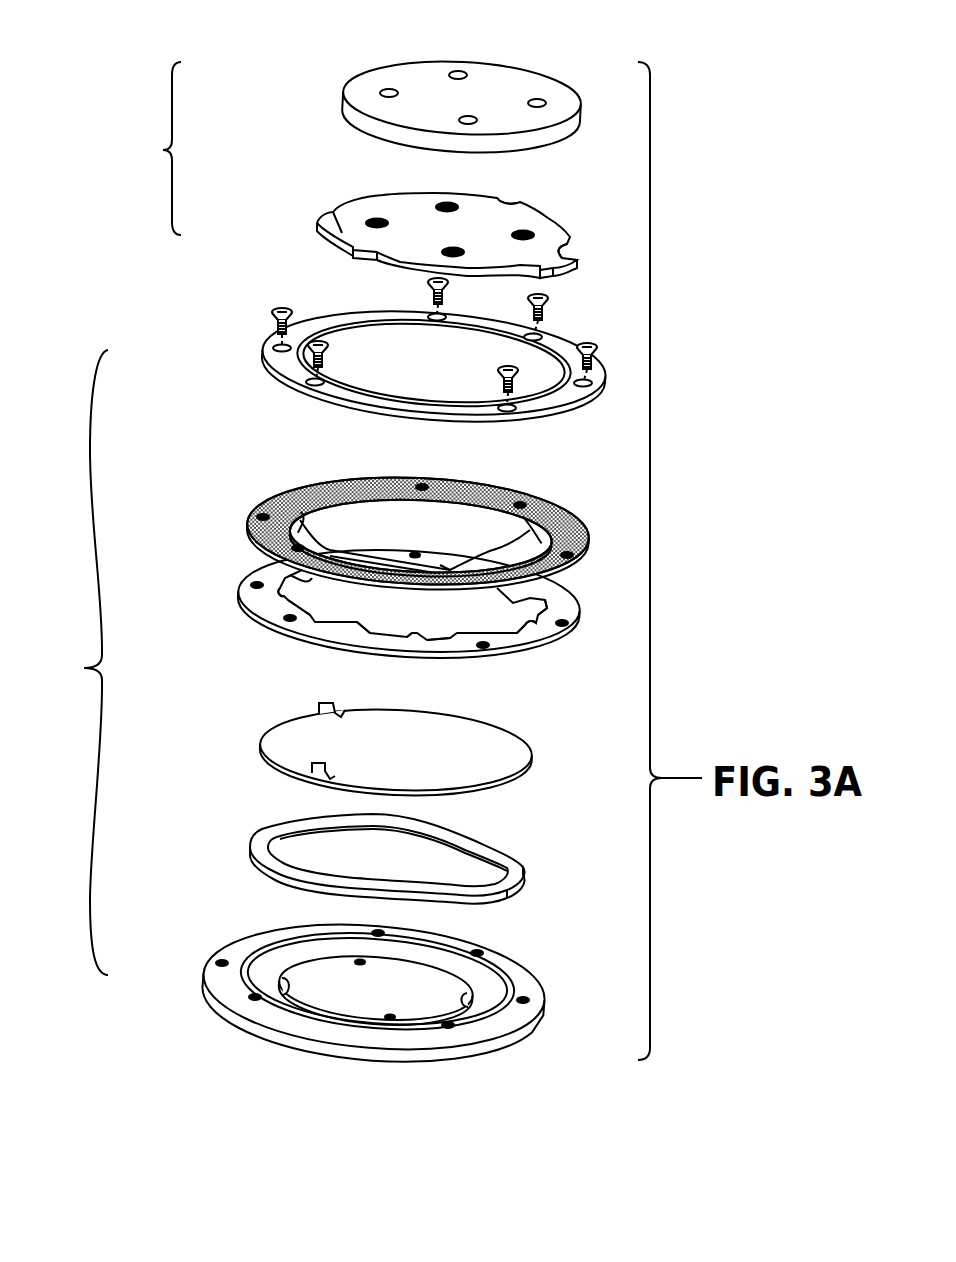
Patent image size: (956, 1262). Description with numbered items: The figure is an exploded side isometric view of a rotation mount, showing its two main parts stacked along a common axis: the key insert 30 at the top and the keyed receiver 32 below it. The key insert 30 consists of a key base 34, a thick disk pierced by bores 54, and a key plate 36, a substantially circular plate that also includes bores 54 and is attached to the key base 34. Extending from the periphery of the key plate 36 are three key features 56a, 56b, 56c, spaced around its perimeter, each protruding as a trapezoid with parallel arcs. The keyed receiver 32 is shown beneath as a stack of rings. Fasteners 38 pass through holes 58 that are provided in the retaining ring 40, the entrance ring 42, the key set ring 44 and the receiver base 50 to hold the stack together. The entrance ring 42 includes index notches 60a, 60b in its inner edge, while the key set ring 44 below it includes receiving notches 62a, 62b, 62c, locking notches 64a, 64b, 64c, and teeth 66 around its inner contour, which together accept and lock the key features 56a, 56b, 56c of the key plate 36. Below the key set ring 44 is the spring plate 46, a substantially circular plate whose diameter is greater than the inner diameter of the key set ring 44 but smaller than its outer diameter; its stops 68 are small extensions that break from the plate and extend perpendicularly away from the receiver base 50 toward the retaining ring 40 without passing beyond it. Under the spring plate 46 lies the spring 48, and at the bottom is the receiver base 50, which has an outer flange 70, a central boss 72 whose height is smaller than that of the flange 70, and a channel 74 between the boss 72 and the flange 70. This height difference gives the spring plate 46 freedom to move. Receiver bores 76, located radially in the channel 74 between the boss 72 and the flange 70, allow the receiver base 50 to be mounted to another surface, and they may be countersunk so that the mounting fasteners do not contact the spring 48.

The key insert 30 is at (154, 148).
The keyed receiver 32 is at (78, 662).
The key base 34 is at (300, 87).
The key plate 36 is at (265, 210).
The fasteners 38 is at (282, 306).
The retaining ring 40 is at (230, 357).
The entrance ring 42 is at (206, 497).
The key set ring 44 is at (212, 594).
The spring plate 46 is at (228, 754).
The spring 48 is at (225, 852).
The receiver base 50 is at (190, 966).
The bores 54 is at (468, 116).
The key feature 56a is at (342, 233).
The key feature 56b is at (510, 203).
The key feature 56c is at (562, 258).
The holes 58 is at (290, 620).
The index notch 60a is at (322, 497).
The index notch 60b is at (540, 525).
The receiving notch 62a is at (312, 578).
The receiving notch 62b is at (410, 635).
The receiving notch 62c is at (575, 606).
The locking notch 64a is at (298, 615).
The locking notch 64b is at (545, 625).
The locking notch 64c is at (445, 567).
The teeth 66 is at (298, 598).
The stops 68 is at (326, 706).
The flange 70 is at (532, 992).
The boss 72 is at (375, 991).
The channel 74 is at (480, 992).
The receiver bores 76 is at (478, 1010).